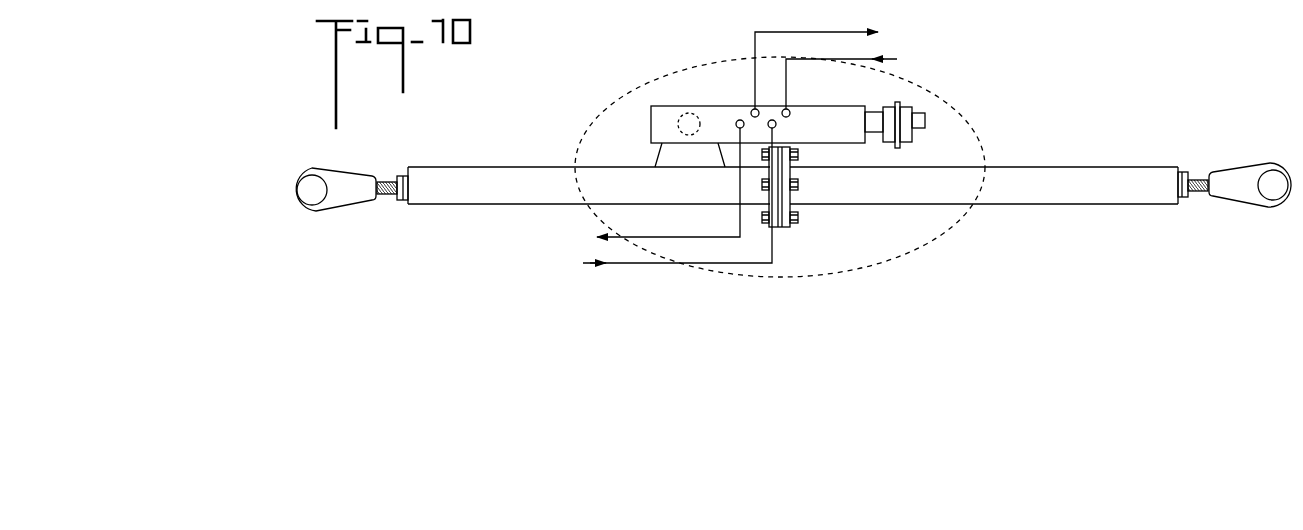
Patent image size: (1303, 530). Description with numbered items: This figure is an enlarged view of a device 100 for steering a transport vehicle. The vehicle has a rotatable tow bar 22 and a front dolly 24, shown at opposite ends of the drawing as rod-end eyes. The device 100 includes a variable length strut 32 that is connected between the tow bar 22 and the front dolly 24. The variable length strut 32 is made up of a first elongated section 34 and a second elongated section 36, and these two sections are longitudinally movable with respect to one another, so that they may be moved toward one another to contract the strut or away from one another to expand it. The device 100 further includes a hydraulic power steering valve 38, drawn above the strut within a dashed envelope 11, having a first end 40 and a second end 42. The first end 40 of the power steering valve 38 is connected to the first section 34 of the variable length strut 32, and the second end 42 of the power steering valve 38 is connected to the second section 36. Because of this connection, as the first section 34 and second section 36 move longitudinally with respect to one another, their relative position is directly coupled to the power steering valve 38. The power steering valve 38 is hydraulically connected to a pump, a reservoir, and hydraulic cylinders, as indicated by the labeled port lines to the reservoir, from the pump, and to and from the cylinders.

The device for steering a transport vehicle 100 is at (1068, 72).
The hydraulic steering unit (dashed envelope) 11 is at (933, 238).
The rotatable tow bar 22 is at (312, 190).
The front dolly 24 is at (1273, 186).
The variable length strut 32 is at (555, 164).
The first elongated section 34 is at (507, 185).
The second elongated section 36 is at (1043, 177).
The hydraulic power steering valve 38 is at (705, 97).
The first end 40 is at (656, 134).
The second end 42 is at (905, 124).